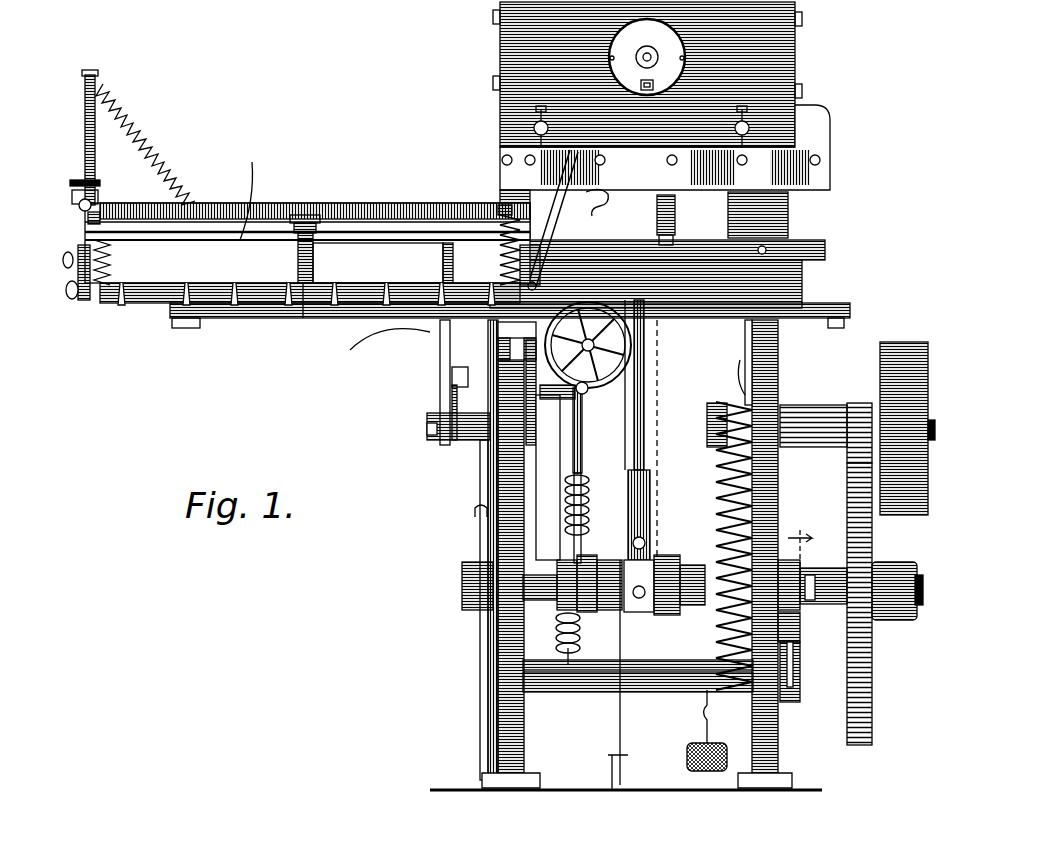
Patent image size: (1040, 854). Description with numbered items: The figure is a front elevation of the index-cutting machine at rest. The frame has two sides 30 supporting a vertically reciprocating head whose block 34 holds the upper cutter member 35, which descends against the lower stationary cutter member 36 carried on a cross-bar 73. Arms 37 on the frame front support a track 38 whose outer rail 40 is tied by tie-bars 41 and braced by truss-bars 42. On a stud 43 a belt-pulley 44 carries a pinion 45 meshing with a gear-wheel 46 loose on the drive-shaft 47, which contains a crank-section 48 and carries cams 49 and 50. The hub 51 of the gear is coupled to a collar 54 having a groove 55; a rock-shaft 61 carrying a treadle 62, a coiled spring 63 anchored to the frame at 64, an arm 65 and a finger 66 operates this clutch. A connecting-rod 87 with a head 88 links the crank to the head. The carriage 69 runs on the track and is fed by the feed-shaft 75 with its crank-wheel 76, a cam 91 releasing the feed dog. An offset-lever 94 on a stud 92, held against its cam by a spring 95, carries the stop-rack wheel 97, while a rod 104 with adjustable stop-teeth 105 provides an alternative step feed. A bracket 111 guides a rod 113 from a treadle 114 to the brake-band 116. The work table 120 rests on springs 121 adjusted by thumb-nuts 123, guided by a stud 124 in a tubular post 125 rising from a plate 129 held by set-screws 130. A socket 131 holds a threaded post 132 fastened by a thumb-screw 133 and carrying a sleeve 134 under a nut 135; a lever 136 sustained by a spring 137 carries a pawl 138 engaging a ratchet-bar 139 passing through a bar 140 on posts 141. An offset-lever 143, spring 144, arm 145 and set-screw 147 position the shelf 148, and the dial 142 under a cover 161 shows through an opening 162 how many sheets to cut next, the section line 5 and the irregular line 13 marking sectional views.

The section line 5 is at (685, 560).
The irregular section line 13 is at (665, 387).
The frame sides 30 is at (498, 735).
The block 34 is at (808, 125).
The upper cutter member 35 is at (503, 155).
The lower stationary cutter member 36 is at (822, 242).
The arms 37 is at (540, 440).
The track 38 is at (225, 315).
The outer rail 40 is at (828, 312).
The tie-bars 41 is at (846, 324).
The truss-bars 42 is at (790, 410).
The stud 43 is at (937, 430).
The belt-pulley 44 is at (915, 360).
The pinion 45 is at (860, 402).
The gear-wheel 46 is at (872, 672).
The drive-shaft 47 is at (924, 590).
The crank-section 48 is at (655, 540).
The cam 49 is at (582, 545).
The cam 50 is at (468, 612).
The hub 51 is at (880, 565).
The collar 54 is at (800, 620).
The circumferential groove 55 is at (808, 565).
The rock-shaft 61 is at (548, 693).
The treadle 62 is at (685, 758).
The coiled spring 63 is at (735, 500).
The frame attachment point 64 is at (742, 385).
The arm 65 is at (796, 668).
The finger 66 is at (810, 610).
The carriage 69 is at (307, 243).
The cross-bar 73 is at (590, 300).
The feed-shaft 75 is at (598, 393).
The crank-wheel 76 is at (548, 400).
The connecting-rod 87 is at (645, 432).
The head 88 is at (667, 205).
The cam 91 is at (386, 350).
The stud 92 is at (512, 470).
The offset-lever 94 is at (580, 475).
The coiled spring 95 is at (589, 500).
The stop-rack wheel 97 is at (498, 335).
The rod 104 is at (200, 285).
The stop-teeth 105 is at (178, 300).
The bracket 111 is at (640, 352).
The rod 113 is at (645, 460).
The treadle 114 is at (608, 757).
The spring brake-band 116 is at (645, 375).
The table 120 is at (232, 212).
The springs 121 is at (108, 265).
The thumb-nuts 123 is at (100, 215).
The depending stud 124 is at (296, 240).
The tubular post 125 is at (303, 318).
The plate 129 is at (432, 263).
The set-screws 130 is at (70, 298).
The socket 131 is at (76, 252).
The threaded post 132 is at (84, 135).
The thumb-screw 133 is at (780, 62).
The sleeve 134 is at (72, 196).
The nut 135 is at (85, 178).
The lever 136 is at (278, 205).
The coiled spring 137 is at (145, 135).
The spring-pressed pawl 138 is at (603, 207).
The ratchet-bar 139 is at (560, 167).
The bar 140 is at (250, 190).
The posts 141 is at (520, 260).
The dial 142 is at (495, 40).
The offset-lever 143 is at (480, 445).
The spring 144 is at (435, 440).
The arm 145 is at (438, 345).
The set-screw 147 is at (452, 378).
The angular shelf 148 is at (378, 263).
The cover 161 is at (647, 57).
The opening 162 is at (664, 73).